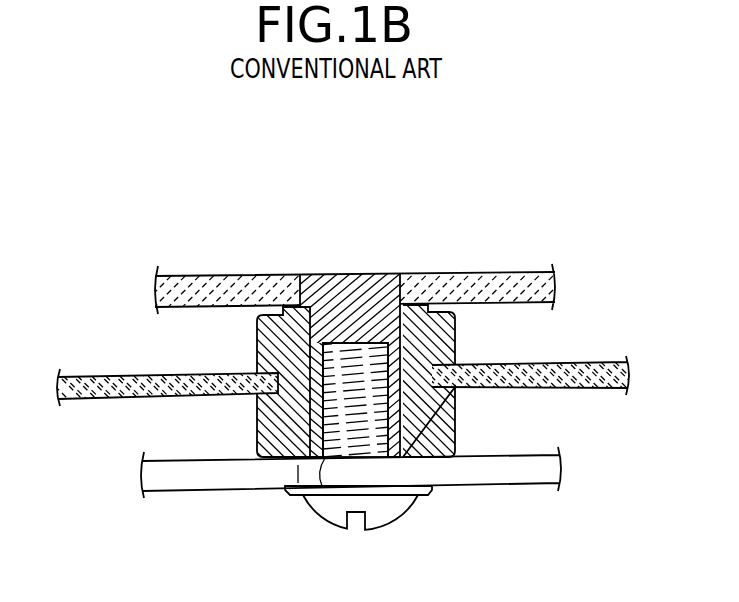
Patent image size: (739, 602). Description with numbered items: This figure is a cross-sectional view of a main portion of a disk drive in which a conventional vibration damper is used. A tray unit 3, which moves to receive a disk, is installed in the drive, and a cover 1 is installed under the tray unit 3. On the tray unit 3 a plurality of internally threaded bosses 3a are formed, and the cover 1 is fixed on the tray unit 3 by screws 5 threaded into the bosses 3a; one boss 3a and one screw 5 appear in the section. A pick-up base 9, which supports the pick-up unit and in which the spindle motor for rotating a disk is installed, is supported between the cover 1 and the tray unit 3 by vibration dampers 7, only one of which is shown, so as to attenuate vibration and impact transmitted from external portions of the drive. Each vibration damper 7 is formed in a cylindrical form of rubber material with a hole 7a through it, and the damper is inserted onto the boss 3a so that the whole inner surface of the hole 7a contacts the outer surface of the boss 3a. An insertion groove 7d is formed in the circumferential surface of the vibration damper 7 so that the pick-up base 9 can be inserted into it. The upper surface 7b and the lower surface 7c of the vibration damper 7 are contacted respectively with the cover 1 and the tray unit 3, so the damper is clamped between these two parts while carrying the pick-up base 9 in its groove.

The cover 1 is at (503, 477).
The tray unit 3 is at (453, 282).
The internally threaded boss 3a is at (306, 500).
The screw 5 is at (390, 505).
The vibration damper 7 is at (247, 440).
The hole 7a is at (403, 417).
The upper surface 7b is at (300, 297).
The lower surface 7c is at (298, 497).
The insertion groove 7d is at (452, 363).
The pick-up base 9 is at (108, 399).